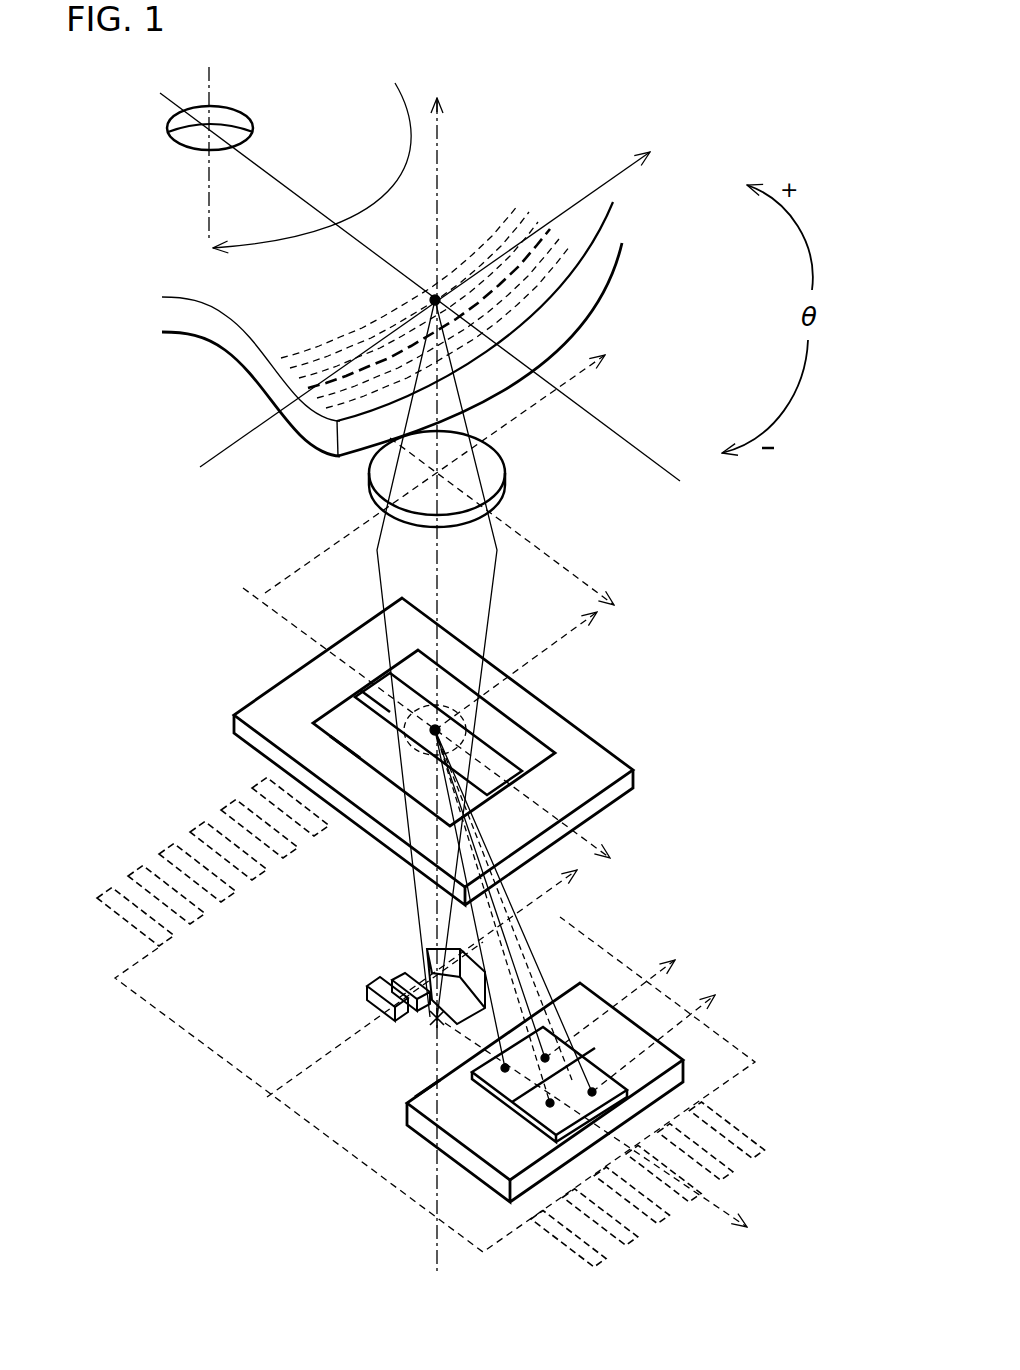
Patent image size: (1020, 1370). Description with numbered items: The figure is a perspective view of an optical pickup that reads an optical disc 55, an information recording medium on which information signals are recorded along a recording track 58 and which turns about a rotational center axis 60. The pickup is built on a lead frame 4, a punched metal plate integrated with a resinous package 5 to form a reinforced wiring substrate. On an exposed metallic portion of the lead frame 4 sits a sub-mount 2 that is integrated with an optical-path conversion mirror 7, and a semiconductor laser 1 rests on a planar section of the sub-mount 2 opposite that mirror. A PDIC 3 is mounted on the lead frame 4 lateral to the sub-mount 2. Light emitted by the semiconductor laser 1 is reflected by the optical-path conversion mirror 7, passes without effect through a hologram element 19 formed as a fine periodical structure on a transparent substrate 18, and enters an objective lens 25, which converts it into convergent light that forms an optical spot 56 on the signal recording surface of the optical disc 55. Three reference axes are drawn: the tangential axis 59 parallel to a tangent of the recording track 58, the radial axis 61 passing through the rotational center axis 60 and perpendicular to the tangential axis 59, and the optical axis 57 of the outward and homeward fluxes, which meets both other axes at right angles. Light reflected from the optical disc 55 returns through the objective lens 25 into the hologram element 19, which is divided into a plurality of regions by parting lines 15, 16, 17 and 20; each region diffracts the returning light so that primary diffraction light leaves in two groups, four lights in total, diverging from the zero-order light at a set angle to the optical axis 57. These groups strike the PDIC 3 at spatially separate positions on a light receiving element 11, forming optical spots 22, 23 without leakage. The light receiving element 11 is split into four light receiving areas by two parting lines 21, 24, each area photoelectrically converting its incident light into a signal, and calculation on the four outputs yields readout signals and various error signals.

The semiconductor laser 1 is at (425, 980).
The sub-mount 2 is at (367, 992).
The PDIC 3 is at (580, 997).
The lead frame 4 is at (320, 1083).
The resinous package 5 is at (353, 1160).
The optical-path conversion mirror 7 is at (427, 968).
The light receiving element 11 is at (430, 1085).
The parting line 15 is at (390, 677).
The parting line 16 is at (373, 680).
The parting line 17 is at (357, 707).
The transparent substrate 18 is at (262, 715).
The hologram element 19 is at (342, 735).
The parting line 20 is at (482, 712).
The parting line 21 is at (727, 1170).
The optical spot 22 is at (597, 1091).
The optical spot 23 is at (563, 1120).
The parting line 24 is at (517, 1093).
The objective lens 25 is at (368, 477).
The optical disc 55 is at (618, 270).
The optical spot 56 is at (430, 300).
The optical axis 57 is at (440, 168).
The recording track 58 is at (315, 348).
The tangential axis 59 is at (598, 182).
The rotational center axis 60 is at (212, 83).
The radial axis 61 is at (618, 430).